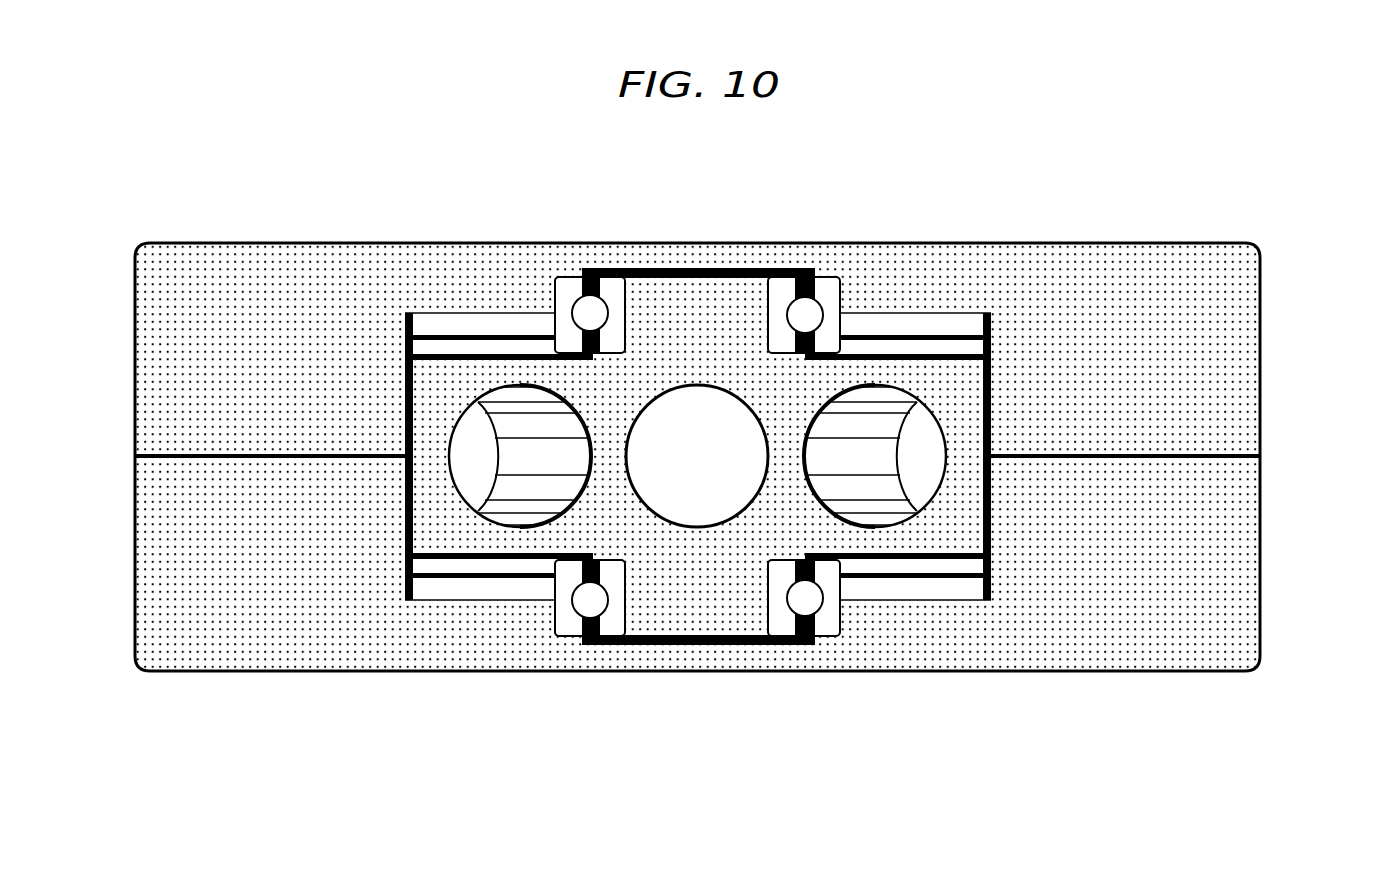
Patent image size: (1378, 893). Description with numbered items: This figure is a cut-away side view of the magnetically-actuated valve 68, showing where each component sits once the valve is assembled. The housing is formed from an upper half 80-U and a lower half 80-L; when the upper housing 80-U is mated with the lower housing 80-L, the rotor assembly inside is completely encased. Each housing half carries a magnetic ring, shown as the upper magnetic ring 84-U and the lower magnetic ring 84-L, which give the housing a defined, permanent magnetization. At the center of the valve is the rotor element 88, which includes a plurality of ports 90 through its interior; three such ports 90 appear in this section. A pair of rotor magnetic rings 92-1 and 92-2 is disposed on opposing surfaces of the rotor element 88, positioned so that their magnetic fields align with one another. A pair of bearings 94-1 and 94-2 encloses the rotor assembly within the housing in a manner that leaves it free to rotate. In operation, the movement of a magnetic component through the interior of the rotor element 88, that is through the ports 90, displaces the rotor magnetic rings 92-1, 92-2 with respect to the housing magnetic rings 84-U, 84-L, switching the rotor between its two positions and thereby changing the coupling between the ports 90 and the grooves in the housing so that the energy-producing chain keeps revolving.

The magnetically-actuated valve 68 is at (1126, 188).
The upper half of housing 80-U is at (1240, 345).
The lower half of housing 80-L is at (170, 546).
The rotor element 88 is at (703, 305).
The rotor magnetic ring 92-1 is at (473, 345).
The rotor magnetic ring 92-2 is at (433, 565).
The magnetic ring 84-U is at (940, 322).
The magnetic ring 84-L is at (520, 592).
The bearing 94-1 is at (813, 313).
The bearing 94-2 is at (802, 598).
The port 90 is at (925, 457).